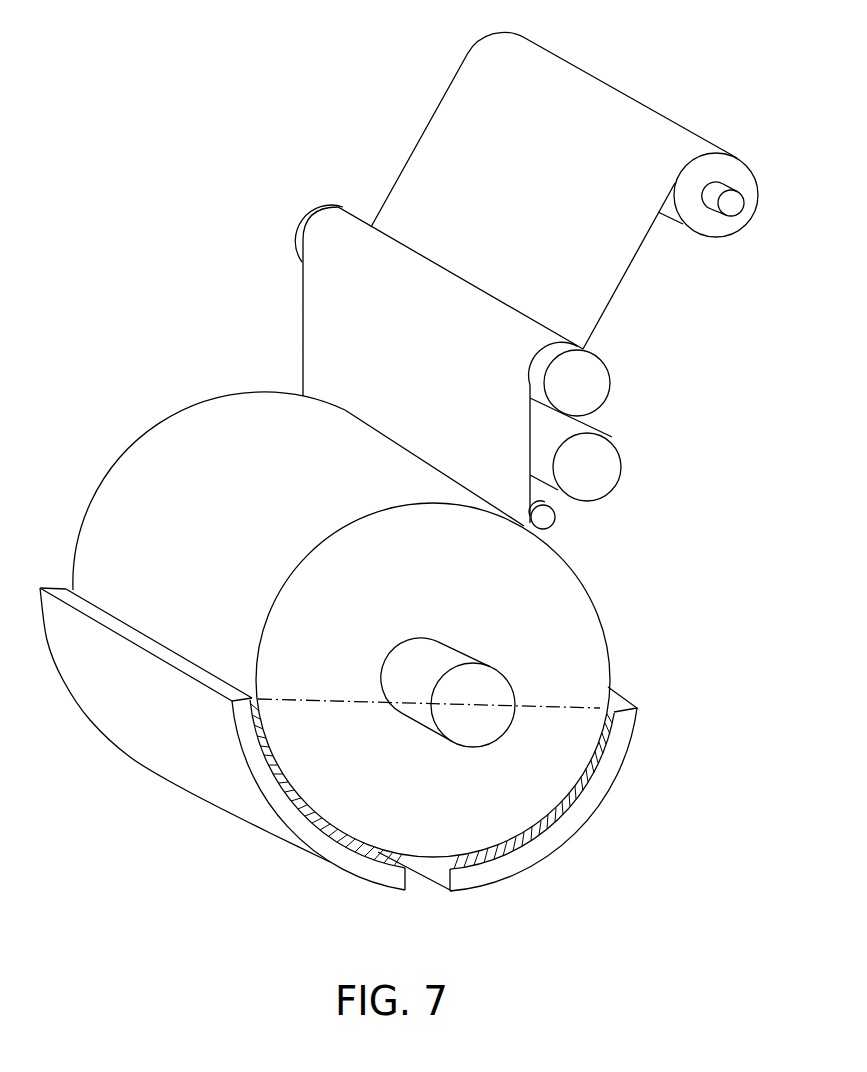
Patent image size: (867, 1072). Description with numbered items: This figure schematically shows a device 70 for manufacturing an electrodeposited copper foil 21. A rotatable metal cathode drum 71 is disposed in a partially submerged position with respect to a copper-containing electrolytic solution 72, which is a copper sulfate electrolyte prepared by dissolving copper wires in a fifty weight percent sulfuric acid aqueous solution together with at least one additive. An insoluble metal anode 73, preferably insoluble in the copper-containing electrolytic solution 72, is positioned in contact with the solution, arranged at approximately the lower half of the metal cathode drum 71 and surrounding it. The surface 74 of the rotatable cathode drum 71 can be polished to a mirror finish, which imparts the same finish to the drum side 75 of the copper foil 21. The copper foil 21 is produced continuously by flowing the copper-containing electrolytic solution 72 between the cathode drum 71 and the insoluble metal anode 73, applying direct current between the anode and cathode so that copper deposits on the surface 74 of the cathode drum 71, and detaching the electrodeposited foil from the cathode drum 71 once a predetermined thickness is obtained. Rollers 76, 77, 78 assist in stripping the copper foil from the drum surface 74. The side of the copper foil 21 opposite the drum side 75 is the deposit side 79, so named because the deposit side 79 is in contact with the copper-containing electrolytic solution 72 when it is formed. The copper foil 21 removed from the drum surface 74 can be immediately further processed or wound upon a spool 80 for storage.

The copper foil 21 is at (342, 313).
The device 70 is at (158, 222).
The metal cathode drum 71 is at (116, 504).
The copper-containing electrolytic solution 72 is at (573, 700).
The insoluble metal anode 73 is at (603, 801).
The surface 74 is at (210, 407).
The drum side 75 is at (447, 131).
The roller 76 is at (612, 383).
The roller 77 is at (620, 466).
The roller 78 is at (553, 522).
The deposit side 79 is at (633, 313).
The spool 80 is at (733, 202).